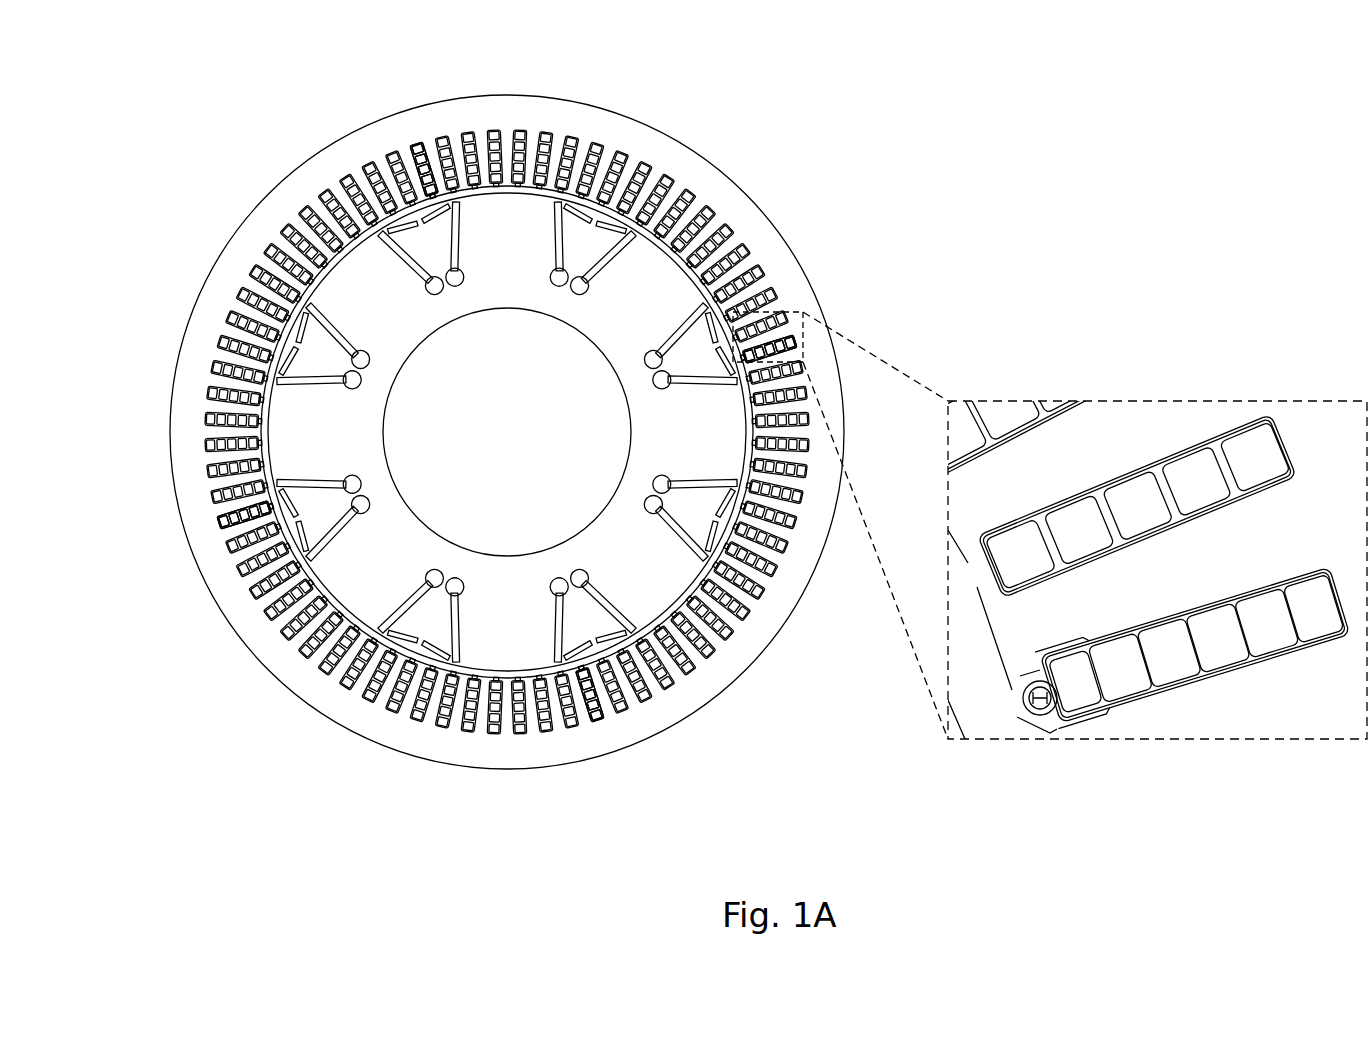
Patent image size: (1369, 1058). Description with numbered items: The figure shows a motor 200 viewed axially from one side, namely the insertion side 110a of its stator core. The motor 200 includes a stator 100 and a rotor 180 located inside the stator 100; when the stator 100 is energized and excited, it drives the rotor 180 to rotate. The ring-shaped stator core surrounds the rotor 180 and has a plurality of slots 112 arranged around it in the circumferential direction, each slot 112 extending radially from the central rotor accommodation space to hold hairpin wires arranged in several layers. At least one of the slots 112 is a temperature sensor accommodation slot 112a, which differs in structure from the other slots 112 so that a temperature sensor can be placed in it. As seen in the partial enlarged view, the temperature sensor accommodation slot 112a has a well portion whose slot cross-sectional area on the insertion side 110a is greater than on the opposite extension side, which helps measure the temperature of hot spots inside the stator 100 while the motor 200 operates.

The motor 200 is at (147, 43).
The stator 100 is at (797, 174).
The insertion side 110a is at (688, 162).
The slots 112 is at (473, 128).
The temperature sensor accommodation slot 112a is at (408, 130).
The rotor 180 is at (688, 297).